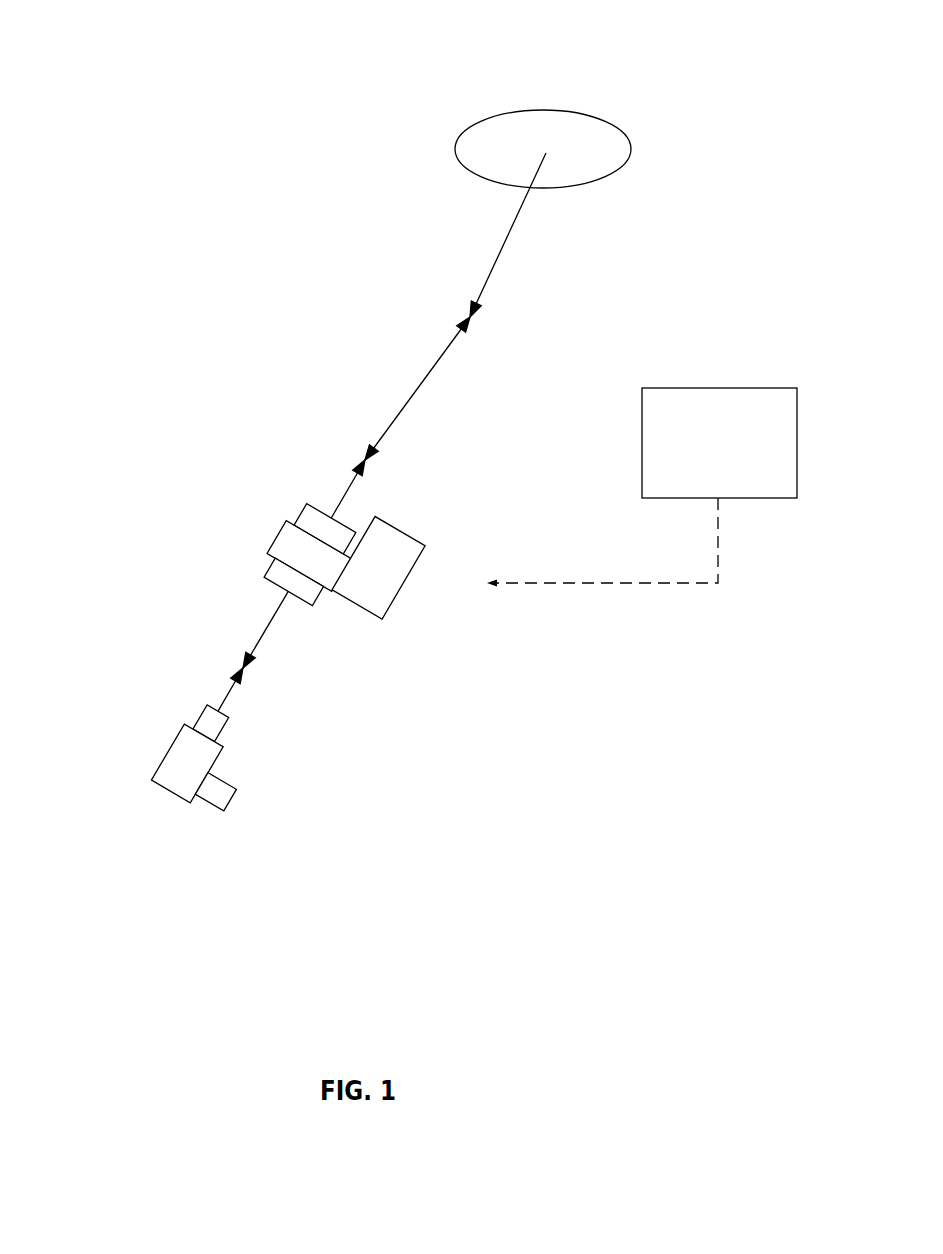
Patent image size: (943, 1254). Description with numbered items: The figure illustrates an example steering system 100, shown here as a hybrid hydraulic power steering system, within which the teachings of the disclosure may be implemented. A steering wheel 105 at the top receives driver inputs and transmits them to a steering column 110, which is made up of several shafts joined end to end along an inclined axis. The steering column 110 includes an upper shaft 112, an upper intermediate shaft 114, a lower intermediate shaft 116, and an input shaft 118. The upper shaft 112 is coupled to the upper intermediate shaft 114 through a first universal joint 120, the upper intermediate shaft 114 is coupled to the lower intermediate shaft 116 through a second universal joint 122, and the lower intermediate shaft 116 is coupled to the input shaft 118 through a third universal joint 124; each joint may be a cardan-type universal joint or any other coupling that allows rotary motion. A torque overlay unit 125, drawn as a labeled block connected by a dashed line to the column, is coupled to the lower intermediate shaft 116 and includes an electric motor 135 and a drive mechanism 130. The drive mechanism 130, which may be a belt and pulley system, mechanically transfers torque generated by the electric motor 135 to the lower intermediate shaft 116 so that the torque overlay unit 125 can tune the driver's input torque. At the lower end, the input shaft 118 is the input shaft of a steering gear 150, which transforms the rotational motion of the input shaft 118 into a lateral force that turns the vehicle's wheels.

The steering system 100 is at (135, 88).
The steering wheel 105 is at (470, 125).
The steering column 110 is at (355, 273).
The upper shaft 112 is at (498, 262).
The upper intermediate shaft 114 is at (413, 398).
The lower intermediate shaft 116 is at (277, 615).
The input shaft 118 is at (232, 695).
The first universal joint 120 is at (472, 320).
The second universal joint 122 is at (362, 457).
The third universal joint 124 is at (240, 668).
The torque overlay unit 125 is at (775, 498).
The drive mechanism 130 is at (278, 537).
The electric motor 135 is at (403, 533).
The steering gear 150 is at (180, 767).